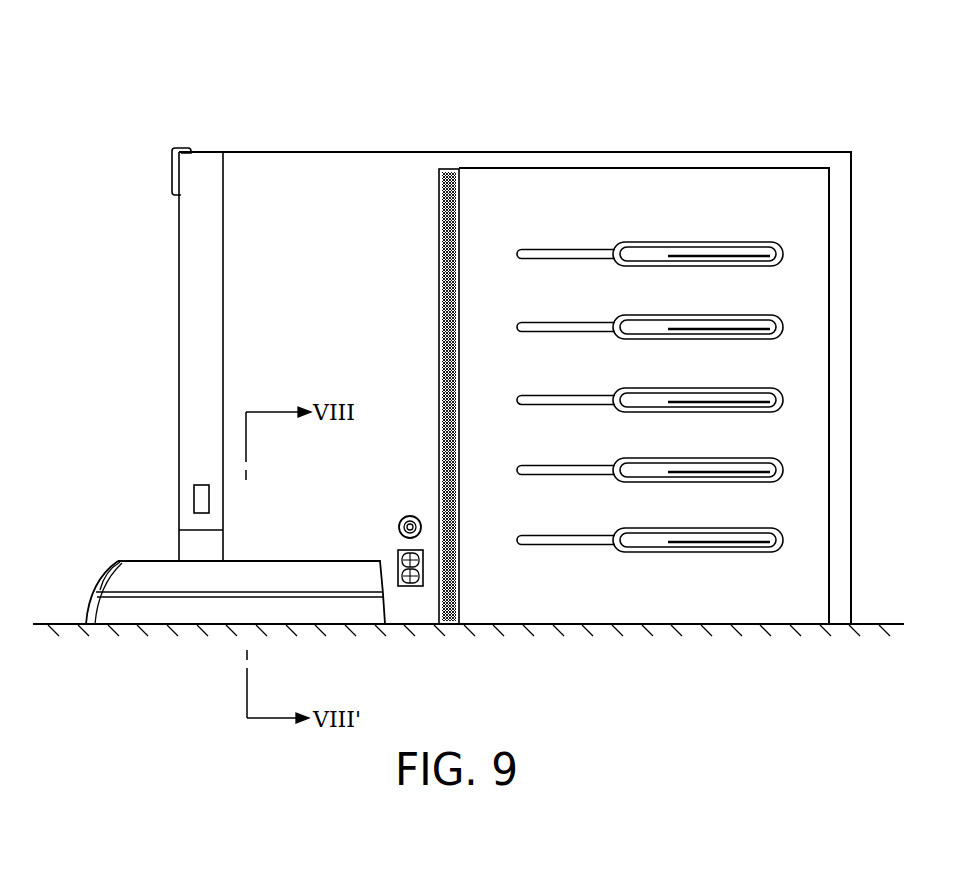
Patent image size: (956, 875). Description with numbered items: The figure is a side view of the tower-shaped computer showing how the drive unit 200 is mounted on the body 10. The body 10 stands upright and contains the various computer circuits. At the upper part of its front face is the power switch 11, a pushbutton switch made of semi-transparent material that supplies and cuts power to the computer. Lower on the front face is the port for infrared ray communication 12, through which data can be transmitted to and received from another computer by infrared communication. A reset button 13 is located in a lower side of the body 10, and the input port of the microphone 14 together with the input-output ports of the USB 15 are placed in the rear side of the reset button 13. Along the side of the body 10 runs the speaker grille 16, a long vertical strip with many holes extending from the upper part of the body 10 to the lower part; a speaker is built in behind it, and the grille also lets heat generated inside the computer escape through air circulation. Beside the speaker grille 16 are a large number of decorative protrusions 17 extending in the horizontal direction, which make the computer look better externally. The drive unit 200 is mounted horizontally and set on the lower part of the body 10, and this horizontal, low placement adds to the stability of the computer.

The body 10 is at (323, 162).
The power switch 11 is at (181, 150).
The port for infrared ray communication 12 is at (192, 549).
The reset button 13 is at (196, 487).
The microphone 14 is at (421, 526).
The USB 15 is at (406, 587).
The speaker grille 16 is at (452, 170).
The decorative protrusions 17 is at (784, 327).
The drive unit 200 is at (176, 612).